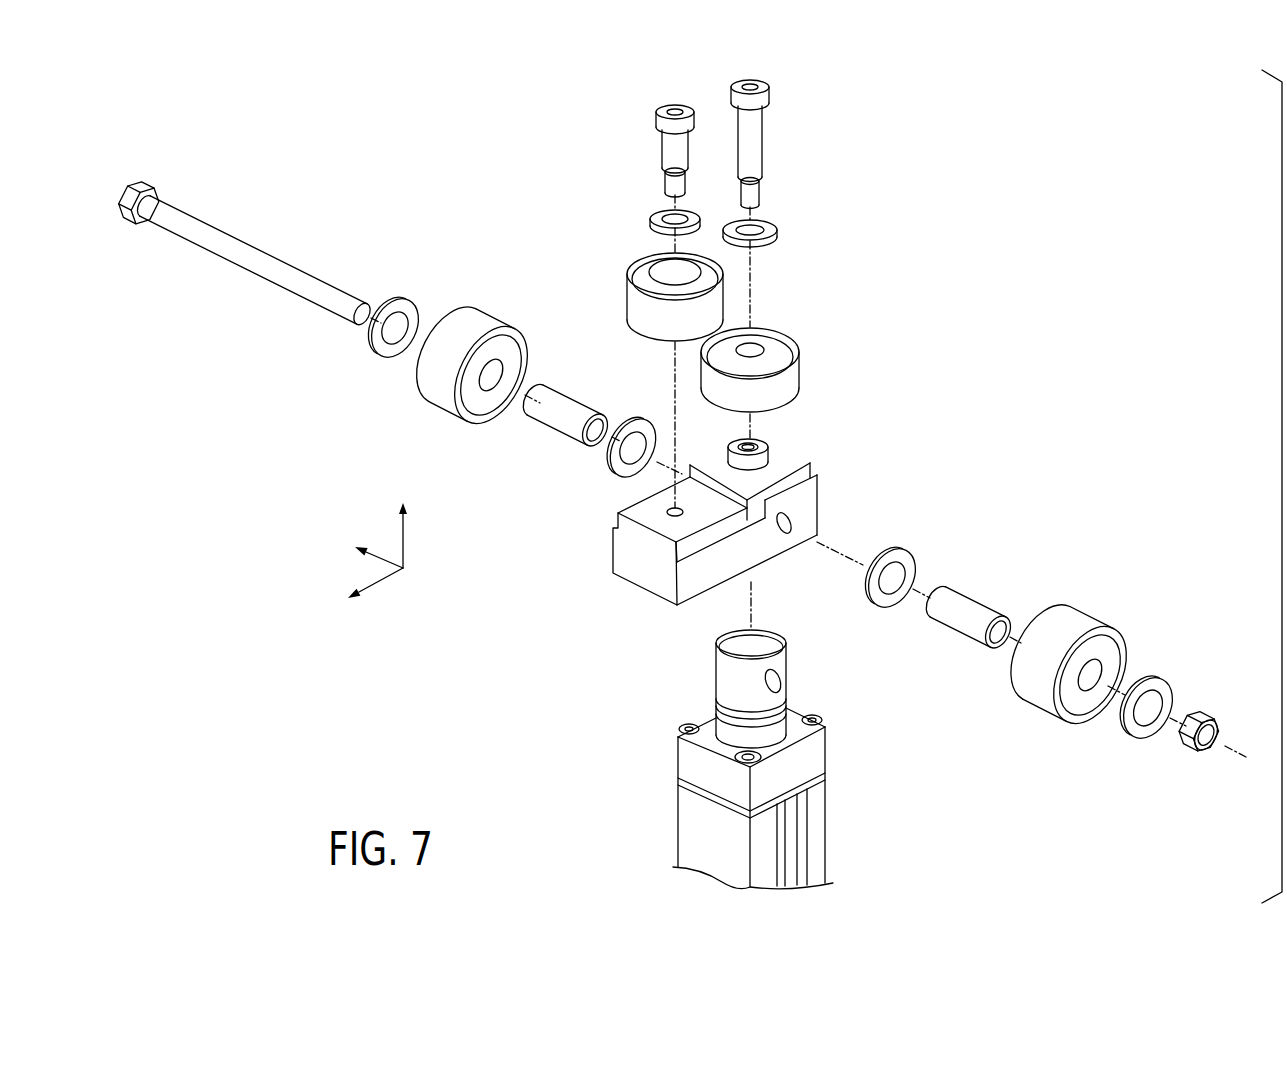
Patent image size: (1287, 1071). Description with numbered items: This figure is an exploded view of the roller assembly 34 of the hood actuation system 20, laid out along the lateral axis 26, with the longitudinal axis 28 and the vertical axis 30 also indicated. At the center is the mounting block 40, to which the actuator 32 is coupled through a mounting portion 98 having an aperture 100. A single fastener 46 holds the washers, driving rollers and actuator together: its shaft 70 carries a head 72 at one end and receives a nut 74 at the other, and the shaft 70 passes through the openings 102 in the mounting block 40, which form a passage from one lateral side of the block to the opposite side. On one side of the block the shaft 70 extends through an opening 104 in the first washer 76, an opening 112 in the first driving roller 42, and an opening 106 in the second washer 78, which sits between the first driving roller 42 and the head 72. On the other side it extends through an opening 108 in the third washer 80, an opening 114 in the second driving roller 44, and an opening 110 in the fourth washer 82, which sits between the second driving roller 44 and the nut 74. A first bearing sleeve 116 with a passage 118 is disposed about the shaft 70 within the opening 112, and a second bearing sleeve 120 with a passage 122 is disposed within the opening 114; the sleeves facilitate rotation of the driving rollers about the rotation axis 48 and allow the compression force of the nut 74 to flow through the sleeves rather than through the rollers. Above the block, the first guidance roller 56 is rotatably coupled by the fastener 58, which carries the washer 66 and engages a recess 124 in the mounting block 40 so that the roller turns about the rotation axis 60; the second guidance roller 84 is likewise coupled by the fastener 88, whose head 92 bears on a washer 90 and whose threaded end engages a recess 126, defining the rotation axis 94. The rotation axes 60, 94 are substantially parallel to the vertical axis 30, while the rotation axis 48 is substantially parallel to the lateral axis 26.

The hood actuation system 20 is at (969, 491).
The lateral axis 26 is at (385, 562).
The second direction 28 is at (380, 580).
The vertical axis 30 is at (405, 542).
The actuator 32 is at (830, 752).
The roller assembly 34 is at (580, 293).
The mounting block 40 is at (818, 505).
The first driving roller 42 is at (495, 318).
The second driving roller 44 is at (1097, 622).
The fastener 46 is at (295, 233).
The rotation axis 48 is at (1227, 756).
The first guidance roller 56 is at (800, 370).
The fastener 58 is at (794, 146).
The rotation axis 60 is at (751, 305).
The washer 66 is at (777, 226).
The shaft 70 is at (207, 224).
The head 72 is at (136, 182).
The nut 74 is at (1209, 713).
The first washer 76 is at (612, 470).
The second washer 78 is at (394, 298).
The third washer 80 is at (908, 556).
The fourth washer 82 is at (1162, 684).
The second guidance roller 84 is at (628, 320).
The fastener 88 is at (637, 109).
The washer 90 is at (655, 214).
The head 92 is at (697, 113).
The rotation axis 94 is at (672, 253).
The mounting portion 98 is at (788, 650).
The aperture 100 is at (781, 683).
The openings 102 is at (787, 537).
The opening 104 is at (658, 462).
The opening 106 is at (406, 336).
The opening 108 is at (905, 593).
The opening 110 is at (1163, 735).
The opening 112 is at (478, 386).
The opening 114 is at (1095, 690).
The first bearing sleeve 116 is at (562, 436).
The passage 118 is at (602, 426).
The second bearing sleeve 120 is at (980, 606).
The passage 122 is at (997, 650).
The recess 124 is at (758, 444).
The recess 126 is at (664, 520).